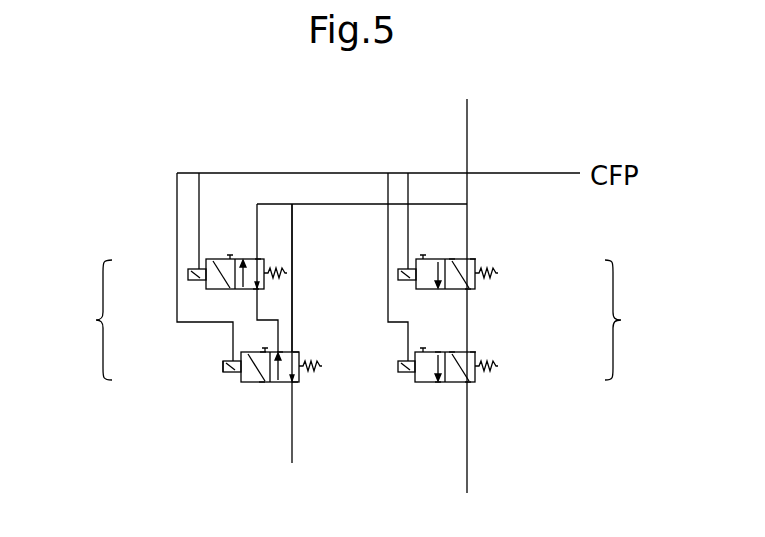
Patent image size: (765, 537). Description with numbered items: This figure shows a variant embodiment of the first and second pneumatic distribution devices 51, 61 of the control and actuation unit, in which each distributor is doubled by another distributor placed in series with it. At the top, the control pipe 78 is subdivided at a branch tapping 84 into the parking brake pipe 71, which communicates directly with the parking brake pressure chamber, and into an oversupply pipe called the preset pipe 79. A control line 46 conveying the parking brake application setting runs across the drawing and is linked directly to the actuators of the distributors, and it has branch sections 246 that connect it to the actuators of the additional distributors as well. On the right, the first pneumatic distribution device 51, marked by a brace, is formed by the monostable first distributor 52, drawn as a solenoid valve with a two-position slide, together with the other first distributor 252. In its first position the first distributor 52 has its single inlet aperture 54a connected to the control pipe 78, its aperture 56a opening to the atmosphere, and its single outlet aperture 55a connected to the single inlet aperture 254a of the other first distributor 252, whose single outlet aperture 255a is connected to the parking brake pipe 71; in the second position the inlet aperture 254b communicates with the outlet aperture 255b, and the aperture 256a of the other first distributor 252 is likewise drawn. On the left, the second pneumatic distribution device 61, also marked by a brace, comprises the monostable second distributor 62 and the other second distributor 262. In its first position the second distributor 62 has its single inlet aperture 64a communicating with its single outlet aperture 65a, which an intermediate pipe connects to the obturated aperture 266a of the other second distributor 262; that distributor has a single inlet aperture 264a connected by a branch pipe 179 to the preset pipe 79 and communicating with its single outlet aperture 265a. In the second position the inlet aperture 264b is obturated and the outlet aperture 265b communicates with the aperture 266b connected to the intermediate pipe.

The control line 46 is at (199, 192).
The branch sections 246 is at (176, 203).
The preset pipe 79 is at (340, 203).
The branch pipe 179 is at (293, 265).
The control pipe 78 is at (468, 122).
The branch tapping 84 is at (468, 204).
The parking brake pipe 71 is at (467, 487).
The second distributor 62 is at (208, 258).
The single inlet aperture 64a is at (258, 259).
The single outlet aperture 65a is at (256, 289).
The other second distributor 262 is at (241, 381).
The single inlet aperture 264a is at (298, 352).
The single inlet aperture 264b is at (263, 351).
The obturated aperture 266a is at (280, 352).
The aperture 266b is at (224, 366).
The single outlet aperture 265a is at (295, 382).
The single outlet aperture 265b is at (262, 382).
The second pneumatic distribution device 61 is at (88, 320).
The first distributor 52 is at (476, 289).
The aperture 56a is at (452, 259).
The single inlet aperture 54a is at (473, 259).
The single outlet aperture 55a is at (468, 289).
The other first distributor 252 is at (476, 381).
The aperture 256a is at (452, 351).
The single inlet aperture 254a is at (475, 352).
The single inlet aperture 254b is at (438, 351).
The single outlet aperture 255a is at (468, 382).
The single outlet aperture 255b is at (438, 382).
The first pneumatic distribution device 51 is at (633, 320).